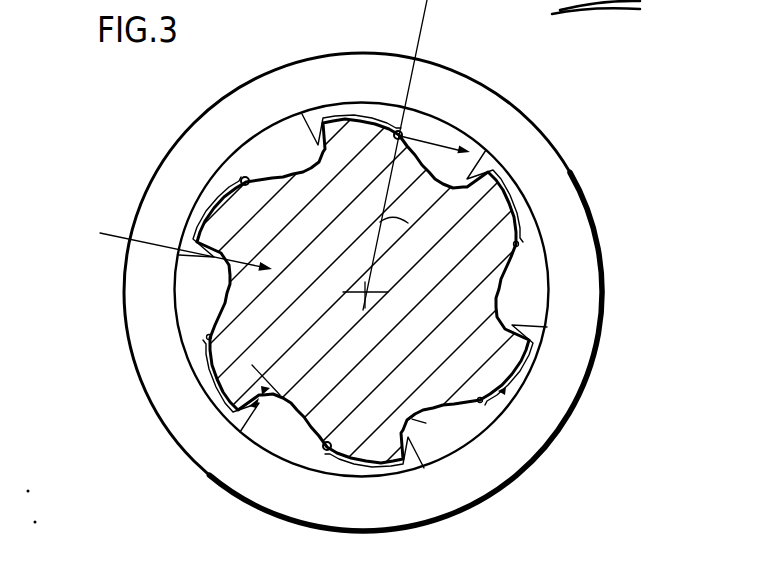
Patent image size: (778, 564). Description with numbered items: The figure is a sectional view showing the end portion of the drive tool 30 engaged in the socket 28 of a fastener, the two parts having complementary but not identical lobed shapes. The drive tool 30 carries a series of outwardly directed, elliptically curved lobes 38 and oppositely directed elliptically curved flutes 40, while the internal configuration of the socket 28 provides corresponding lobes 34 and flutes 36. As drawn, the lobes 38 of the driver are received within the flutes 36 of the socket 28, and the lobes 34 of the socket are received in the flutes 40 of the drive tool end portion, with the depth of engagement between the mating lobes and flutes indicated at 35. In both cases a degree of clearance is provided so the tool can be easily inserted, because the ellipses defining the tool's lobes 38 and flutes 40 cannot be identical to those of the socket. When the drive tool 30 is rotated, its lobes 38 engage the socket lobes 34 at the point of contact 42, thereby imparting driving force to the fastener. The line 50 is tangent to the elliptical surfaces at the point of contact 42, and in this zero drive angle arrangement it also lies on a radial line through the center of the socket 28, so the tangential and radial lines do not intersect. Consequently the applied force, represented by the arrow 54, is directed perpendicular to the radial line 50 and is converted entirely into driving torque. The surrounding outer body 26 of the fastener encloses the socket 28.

The outer ring 26 is at (577, 238).
The socket 28 is at (486, 187).
The drive tool 30 is at (166, 244).
The lobes of the socket recess 34 is at (507, 287).
The depth of engagement 35 is at (258, 428).
The flutes of the socket recess 36 is at (518, 358).
The lobes of the drive tool 38 is at (503, 393).
The flutes of the drive tool 40 is at (420, 419).
The point of contact 42 is at (243, 178).
The tangent line 50 is at (404, 155).
The arrow indicating applied force 54 is at (470, 142).